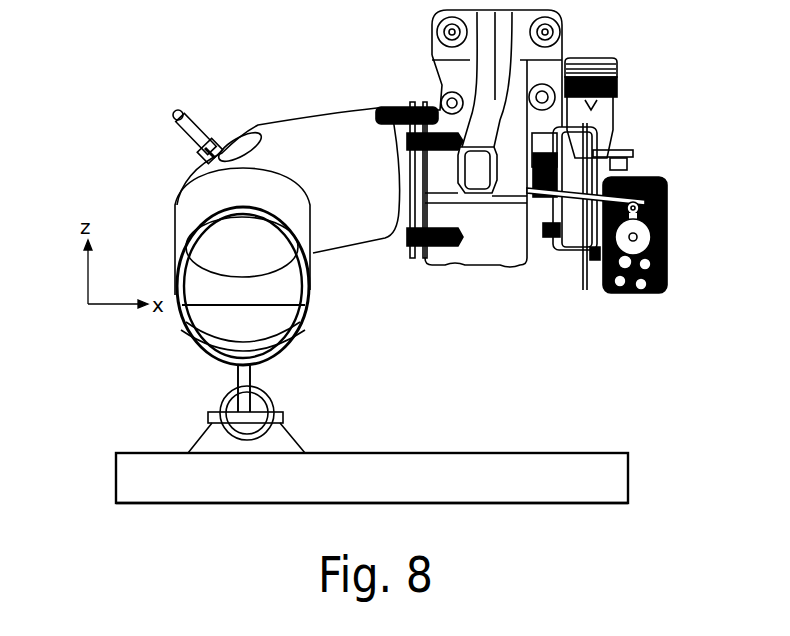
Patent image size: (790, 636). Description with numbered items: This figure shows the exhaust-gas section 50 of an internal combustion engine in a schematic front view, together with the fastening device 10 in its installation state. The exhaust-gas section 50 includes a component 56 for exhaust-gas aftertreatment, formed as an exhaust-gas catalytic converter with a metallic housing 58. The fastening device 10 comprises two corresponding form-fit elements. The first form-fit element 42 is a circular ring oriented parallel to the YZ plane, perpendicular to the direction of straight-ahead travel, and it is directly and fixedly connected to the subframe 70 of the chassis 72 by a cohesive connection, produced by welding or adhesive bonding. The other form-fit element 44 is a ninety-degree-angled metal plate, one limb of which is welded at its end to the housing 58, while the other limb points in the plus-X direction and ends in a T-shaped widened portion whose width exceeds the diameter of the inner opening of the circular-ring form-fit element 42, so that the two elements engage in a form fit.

The exhaust-gas section 50 is at (137, 74).
The component for exhaust-gas aftertreatment 56 is at (266, 118).
The metallic housing 58 is at (198, 207).
The fastening device 10 is at (331, 353).
The form-fit element 44 is at (236, 371).
The first form-fit element 42 is at (262, 393).
The subframe 70 is at (145, 477).
The chassis 72 is at (462, 508).